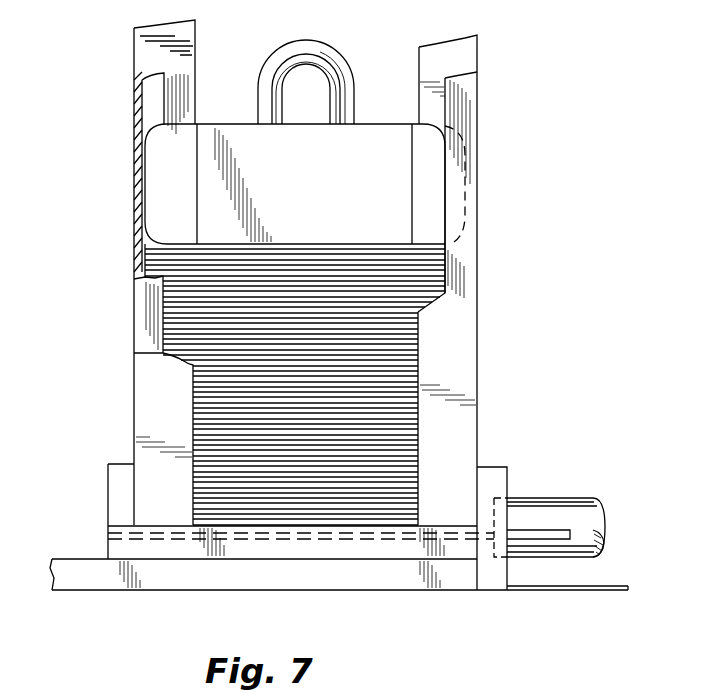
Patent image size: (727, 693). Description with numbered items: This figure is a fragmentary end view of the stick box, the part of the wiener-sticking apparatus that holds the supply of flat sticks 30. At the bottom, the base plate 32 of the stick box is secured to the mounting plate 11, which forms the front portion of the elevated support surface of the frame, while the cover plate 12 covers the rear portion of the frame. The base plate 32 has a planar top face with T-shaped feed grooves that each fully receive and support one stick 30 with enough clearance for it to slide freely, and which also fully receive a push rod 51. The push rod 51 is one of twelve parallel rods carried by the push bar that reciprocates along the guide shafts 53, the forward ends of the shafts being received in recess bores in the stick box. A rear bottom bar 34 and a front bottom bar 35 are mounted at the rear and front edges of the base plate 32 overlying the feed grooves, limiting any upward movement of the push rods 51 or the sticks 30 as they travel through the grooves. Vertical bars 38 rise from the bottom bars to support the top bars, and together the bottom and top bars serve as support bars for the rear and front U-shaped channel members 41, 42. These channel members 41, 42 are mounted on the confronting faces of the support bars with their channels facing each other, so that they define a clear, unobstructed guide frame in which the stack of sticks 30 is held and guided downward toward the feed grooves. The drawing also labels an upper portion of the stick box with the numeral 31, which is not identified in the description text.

The mounting plate 11 is at (171, 578).
The cover plate 12 is at (590, 588).
The stick 30 is at (156, 252).
The coil housing 31 is at (372, 132).
The base plate 32 is at (415, 553).
The rear bottom bar 34 is at (500, 481).
The front bottom bar 35 is at (118, 494).
The vertical bar 38 is at (147, 60).
The rear U-shaped channel member 41 is at (468, 97).
The front U-shaped channel member 42 is at (149, 105).
The push rod 51 is at (545, 535).
The guide shaft 53 is at (598, 530).